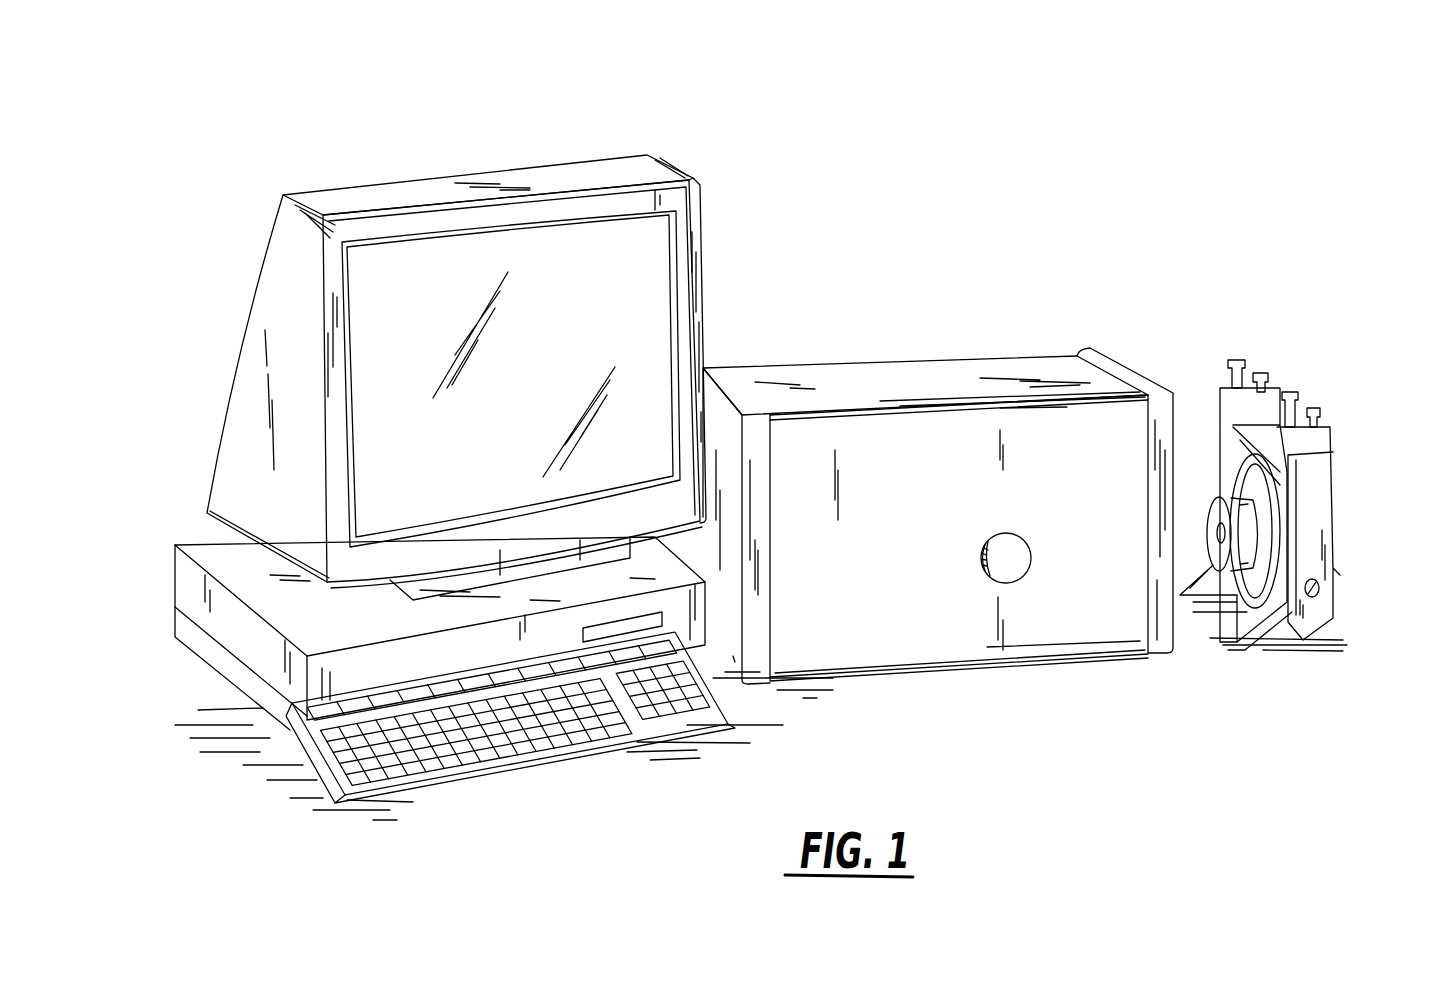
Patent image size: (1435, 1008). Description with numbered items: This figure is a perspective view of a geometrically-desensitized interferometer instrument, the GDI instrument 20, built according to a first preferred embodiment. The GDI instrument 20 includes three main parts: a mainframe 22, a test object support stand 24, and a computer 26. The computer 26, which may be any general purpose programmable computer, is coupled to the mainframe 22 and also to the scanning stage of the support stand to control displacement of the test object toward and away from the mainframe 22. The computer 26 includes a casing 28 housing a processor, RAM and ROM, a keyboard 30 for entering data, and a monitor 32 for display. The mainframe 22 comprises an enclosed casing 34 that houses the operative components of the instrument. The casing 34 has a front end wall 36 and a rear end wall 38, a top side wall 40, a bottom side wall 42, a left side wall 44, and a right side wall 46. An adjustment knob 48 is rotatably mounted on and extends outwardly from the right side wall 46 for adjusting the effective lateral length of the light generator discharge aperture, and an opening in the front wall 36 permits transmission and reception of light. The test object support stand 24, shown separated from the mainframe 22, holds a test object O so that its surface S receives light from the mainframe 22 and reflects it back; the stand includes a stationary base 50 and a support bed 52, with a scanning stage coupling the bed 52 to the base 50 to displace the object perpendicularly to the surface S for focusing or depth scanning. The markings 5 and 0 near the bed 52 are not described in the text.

The GDI instrument 20 is at (1230, 128).
The mainframe 22 is at (1005, 295).
The test object support stand 24 is at (1346, 422).
The computer 26 is at (581, 160).
The casing 28 is at (192, 588).
The keyboard 30 is at (498, 772).
The monitor 32 is at (325, 195).
The casing 34 is at (842, 383).
The front end wall 36 is at (1177, 407).
The rear end wall 38 is at (733, 656).
The top side wall 40 is at (1022, 377).
The bottom side wall 42 is at (903, 667).
The left side wall 44 is at (763, 368).
The right side wall 46 is at (1043, 624).
The adjustment knob 48 is at (1031, 562).
The stationary base 50 is at (1327, 563).
The support bed 52 is at (1213, 473).
The position marking S 5 is at (1220, 513).
The position marking O 0 is at (1217, 562).